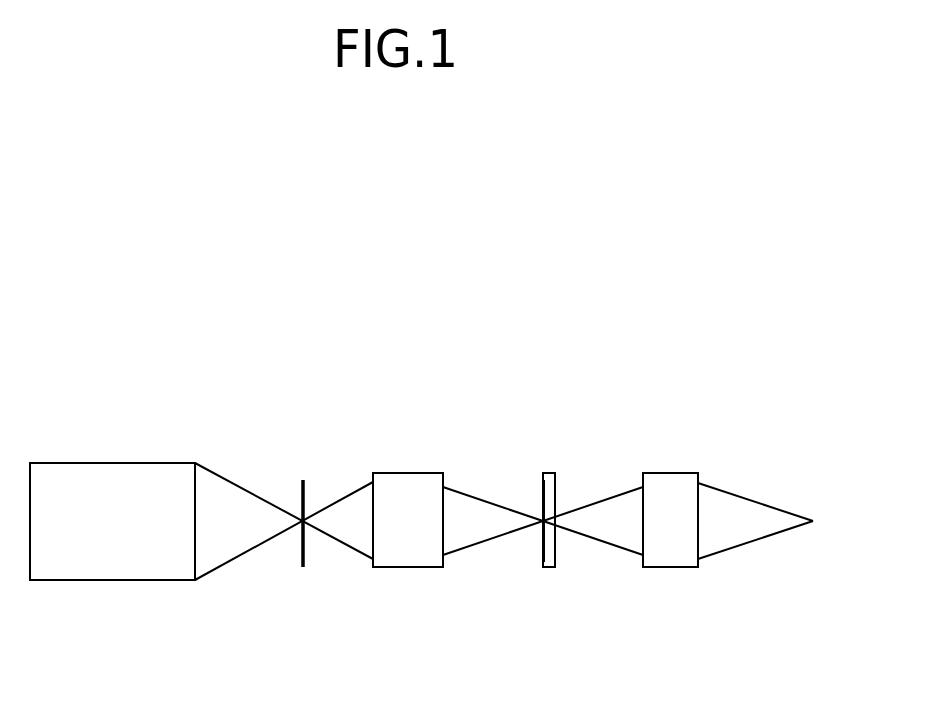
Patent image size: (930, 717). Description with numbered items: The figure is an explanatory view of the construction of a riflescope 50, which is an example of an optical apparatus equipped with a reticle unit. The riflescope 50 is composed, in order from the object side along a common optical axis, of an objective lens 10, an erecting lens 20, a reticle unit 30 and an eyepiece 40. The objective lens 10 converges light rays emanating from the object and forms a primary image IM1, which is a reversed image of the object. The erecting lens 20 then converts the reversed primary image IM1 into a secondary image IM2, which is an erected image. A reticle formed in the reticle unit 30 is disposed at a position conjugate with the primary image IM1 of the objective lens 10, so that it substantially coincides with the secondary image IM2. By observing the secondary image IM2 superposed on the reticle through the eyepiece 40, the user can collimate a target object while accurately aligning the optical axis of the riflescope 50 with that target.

The objective lens 10 is at (112, 570).
The primary image IM1 is at (303, 567).
The erecting lens 20 is at (407, 567).
The secondary image IM2 is at (540, 557).
The reticle unit 30 is at (548, 567).
The eyepiece 40 is at (674, 556).
The riflescope 50 is at (538, 390).